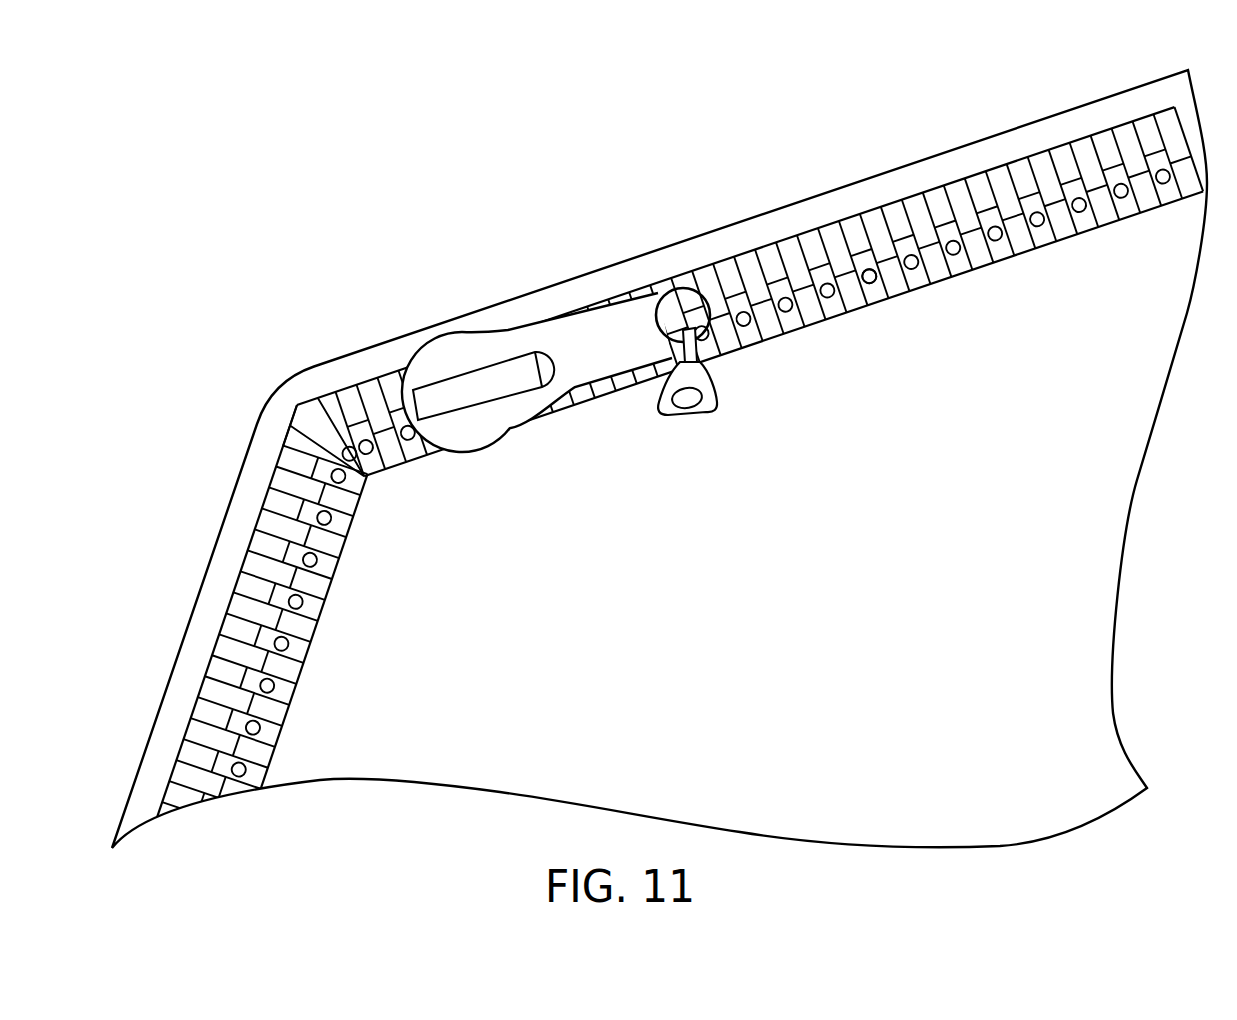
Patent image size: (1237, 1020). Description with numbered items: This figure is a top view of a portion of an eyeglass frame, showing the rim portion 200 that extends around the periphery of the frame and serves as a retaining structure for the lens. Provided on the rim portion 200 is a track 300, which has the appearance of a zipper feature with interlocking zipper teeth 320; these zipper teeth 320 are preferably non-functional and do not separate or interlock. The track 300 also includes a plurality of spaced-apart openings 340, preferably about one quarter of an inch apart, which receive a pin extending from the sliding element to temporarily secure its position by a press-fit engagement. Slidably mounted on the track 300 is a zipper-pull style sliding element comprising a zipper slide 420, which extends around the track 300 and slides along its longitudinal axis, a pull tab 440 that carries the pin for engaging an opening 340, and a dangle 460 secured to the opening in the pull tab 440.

The rim portion 200 is at (1011, 148).
The track 300 is at (672, 500).
The zipper teeth 320 is at (770, 260).
The opening 340 is at (869, 283).
The zipper slide 420 is at (454, 358).
The pull tab 440 is at (635, 333).
The dangle 460 is at (710, 403).